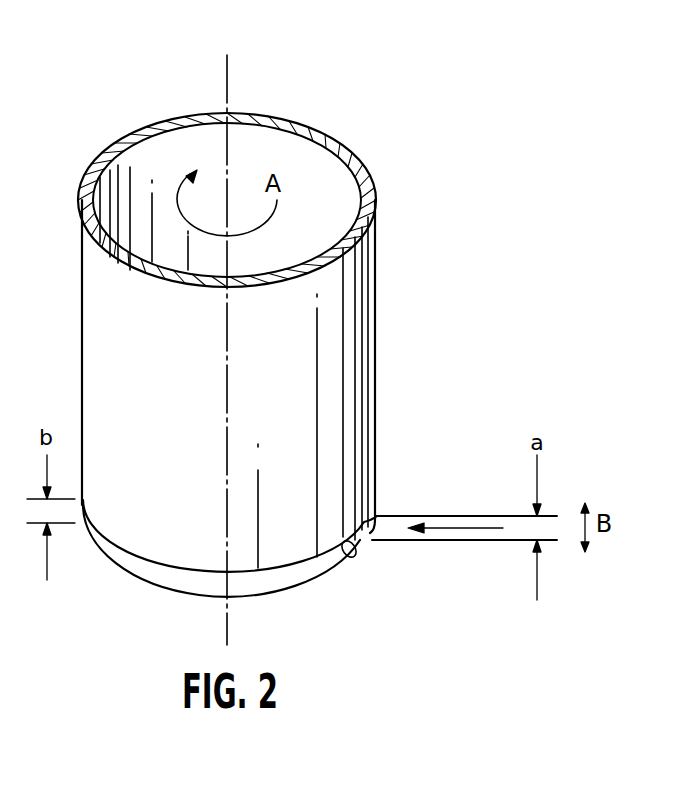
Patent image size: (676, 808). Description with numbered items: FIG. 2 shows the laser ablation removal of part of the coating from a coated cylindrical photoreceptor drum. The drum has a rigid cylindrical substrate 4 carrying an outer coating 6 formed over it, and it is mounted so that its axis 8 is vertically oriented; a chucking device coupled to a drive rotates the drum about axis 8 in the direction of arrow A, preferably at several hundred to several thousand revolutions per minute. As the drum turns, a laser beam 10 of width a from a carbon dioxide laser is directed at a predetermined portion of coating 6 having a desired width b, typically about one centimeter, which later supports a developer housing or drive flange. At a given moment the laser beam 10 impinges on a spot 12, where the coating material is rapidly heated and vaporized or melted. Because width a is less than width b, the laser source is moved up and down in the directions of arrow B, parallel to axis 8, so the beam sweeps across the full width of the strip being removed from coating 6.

The rigid cylindrical substrate 4 is at (185, 581).
The outer coating 6 is at (103, 542).
The axis 8 is at (227, 98).
The laser beam 10 is at (455, 517).
The spot 12 is at (352, 556).